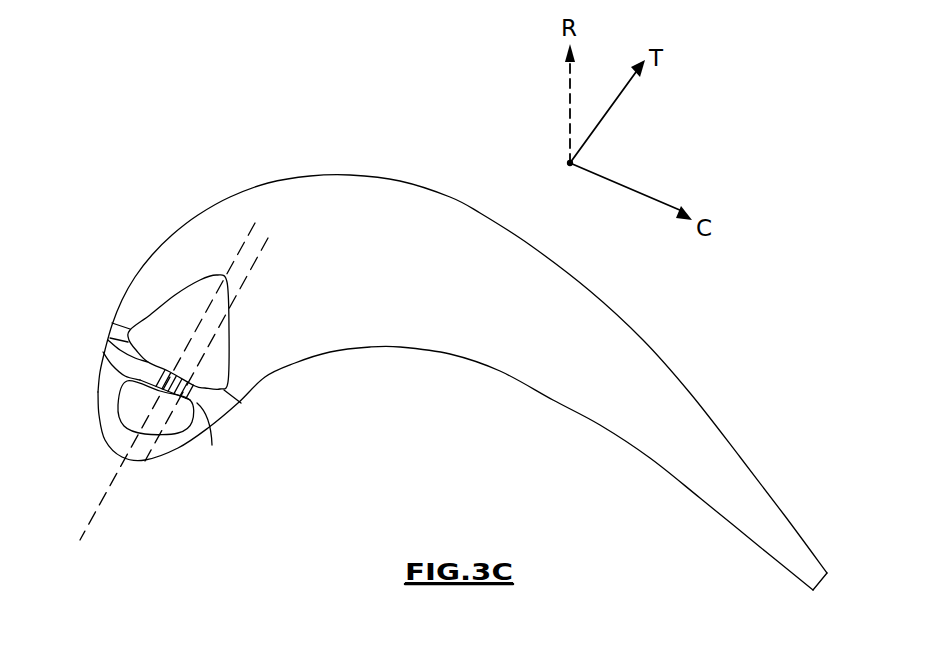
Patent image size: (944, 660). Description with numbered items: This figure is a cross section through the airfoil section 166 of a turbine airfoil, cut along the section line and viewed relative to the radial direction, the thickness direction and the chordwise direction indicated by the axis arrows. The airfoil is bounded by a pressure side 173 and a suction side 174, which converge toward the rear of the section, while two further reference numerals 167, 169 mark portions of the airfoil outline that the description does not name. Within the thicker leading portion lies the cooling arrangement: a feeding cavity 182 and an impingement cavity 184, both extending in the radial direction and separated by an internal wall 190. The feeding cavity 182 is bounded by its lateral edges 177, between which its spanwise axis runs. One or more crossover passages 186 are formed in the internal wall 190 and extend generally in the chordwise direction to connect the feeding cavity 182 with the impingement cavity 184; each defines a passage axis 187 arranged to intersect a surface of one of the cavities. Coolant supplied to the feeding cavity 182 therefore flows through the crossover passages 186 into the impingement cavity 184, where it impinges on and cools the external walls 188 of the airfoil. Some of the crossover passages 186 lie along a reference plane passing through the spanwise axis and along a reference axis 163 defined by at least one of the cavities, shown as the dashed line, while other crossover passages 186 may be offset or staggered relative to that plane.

The reference axis 163 is at (108, 487).
The airfoil section 166 is at (141, 118).
The leading edge wall 167 is at (143, 462).
The trailing edge 169 is at (820, 584).
The pressure side 173 is at (553, 400).
The suction side 174 is at (643, 340).
The lateral edges 177 is at (117, 325).
The feeding cavity 182 is at (187, 290).
The impingement cavity 184 is at (173, 463).
The crossover passages 186 is at (108, 346).
The passage axis 187 is at (273, 226).
The external walls 188 is at (147, 280).
The internal wall 190 is at (212, 445).